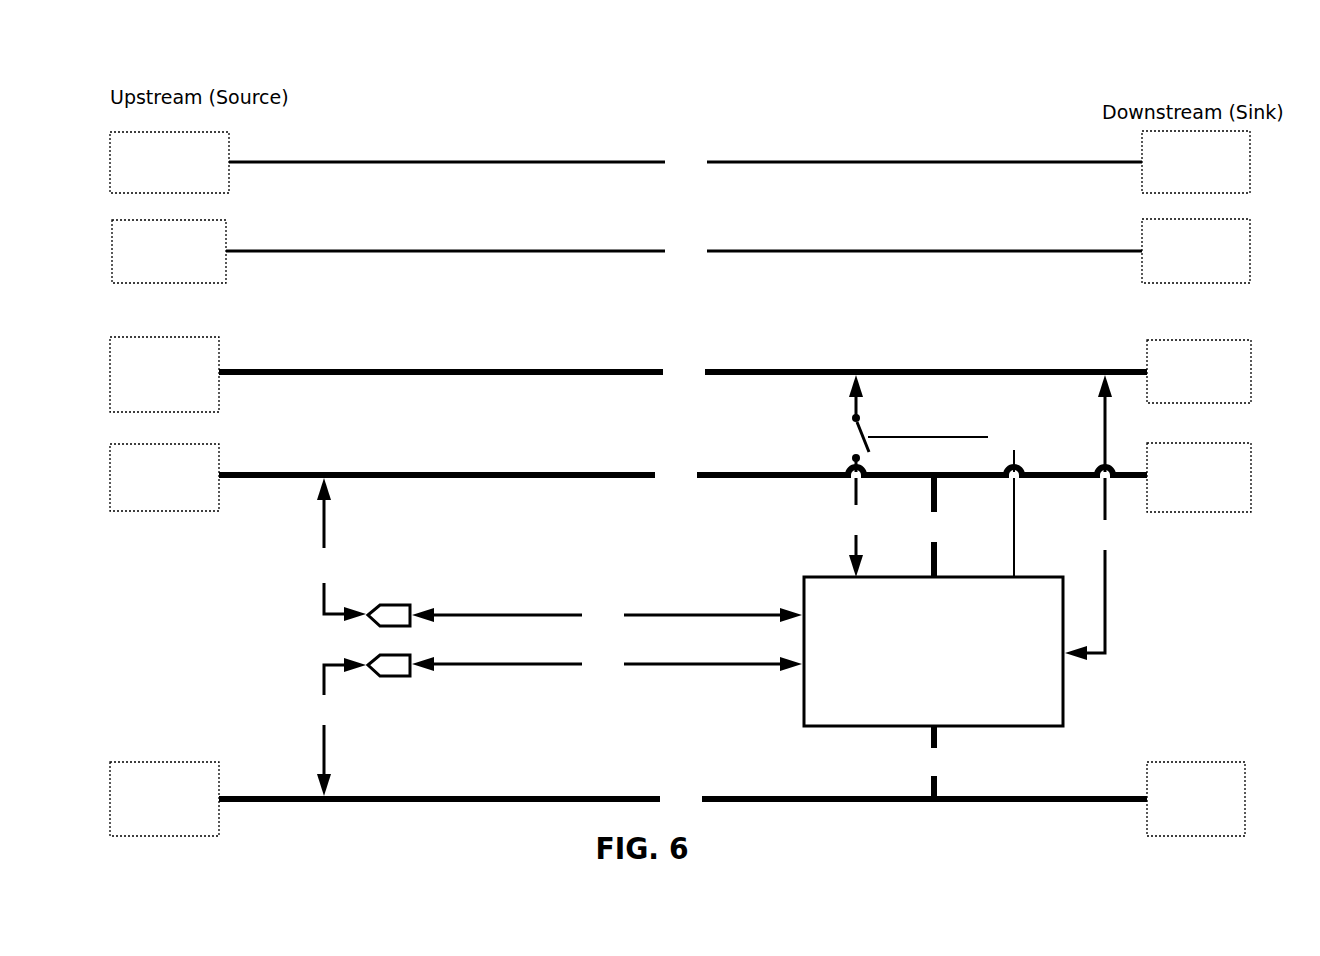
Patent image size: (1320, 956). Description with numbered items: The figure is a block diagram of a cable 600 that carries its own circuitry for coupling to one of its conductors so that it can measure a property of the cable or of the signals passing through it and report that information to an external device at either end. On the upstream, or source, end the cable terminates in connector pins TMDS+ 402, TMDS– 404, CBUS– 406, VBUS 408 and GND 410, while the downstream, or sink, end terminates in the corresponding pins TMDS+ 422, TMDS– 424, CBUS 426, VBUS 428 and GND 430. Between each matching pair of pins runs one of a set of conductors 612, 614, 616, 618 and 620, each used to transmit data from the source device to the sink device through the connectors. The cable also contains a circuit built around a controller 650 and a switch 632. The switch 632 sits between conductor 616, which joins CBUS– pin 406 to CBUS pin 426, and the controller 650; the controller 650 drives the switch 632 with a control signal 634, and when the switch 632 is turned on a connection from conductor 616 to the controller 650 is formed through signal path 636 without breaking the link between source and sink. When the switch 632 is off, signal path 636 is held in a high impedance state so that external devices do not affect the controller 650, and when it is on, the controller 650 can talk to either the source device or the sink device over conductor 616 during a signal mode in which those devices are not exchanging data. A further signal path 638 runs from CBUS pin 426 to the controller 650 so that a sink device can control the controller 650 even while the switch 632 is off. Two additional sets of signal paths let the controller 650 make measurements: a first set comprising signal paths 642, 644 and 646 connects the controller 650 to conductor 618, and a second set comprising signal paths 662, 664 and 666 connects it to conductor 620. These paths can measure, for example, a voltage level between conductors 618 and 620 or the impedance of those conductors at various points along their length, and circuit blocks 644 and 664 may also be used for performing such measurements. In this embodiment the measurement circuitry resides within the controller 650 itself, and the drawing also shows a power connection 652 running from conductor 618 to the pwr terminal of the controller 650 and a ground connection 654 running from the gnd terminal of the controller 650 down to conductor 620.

The cable 600 is at (1234, 31).
The TMDS+ pin 402 is at (169, 162).
The TMDS– pin 404 is at (169, 251).
The CBUS– pin 406 is at (164, 374).
The VBUS pin 408 is at (164, 477).
The GND pin 410 is at (164, 799).
The TMDS+ pin 422 is at (1196, 162).
The TMDS– pin 424 is at (1196, 251).
The CBUS pin 426 is at (1199, 371).
The VBUS pin 428 is at (1199, 477).
The GND pin 430 is at (1196, 799).
The conductor 612 is at (685, 162).
The conductor 614 is at (684, 251).
The conductor 616 is at (683, 372).
The conductor 618 is at (683, 475).
The conductor 620 is at (683, 799).
The switch 632 is at (843, 423).
The control signal 634 is at (948, 501).
The signal path 636 is at (856, 527).
The signal path 638 is at (1094, 517).
The signal path 642 is at (607, 615).
The circuit block 644 is at (390, 603).
The signal path 646 is at (335, 549).
The controller 650 is at (933, 651).
The power line 652 is at (933, 527).
The ground line 654 is at (933, 761).
The signal path 662 is at (607, 664).
The circuit block 664 is at (390, 680).
The signal path 666 is at (335, 727).